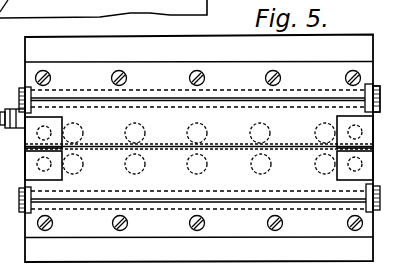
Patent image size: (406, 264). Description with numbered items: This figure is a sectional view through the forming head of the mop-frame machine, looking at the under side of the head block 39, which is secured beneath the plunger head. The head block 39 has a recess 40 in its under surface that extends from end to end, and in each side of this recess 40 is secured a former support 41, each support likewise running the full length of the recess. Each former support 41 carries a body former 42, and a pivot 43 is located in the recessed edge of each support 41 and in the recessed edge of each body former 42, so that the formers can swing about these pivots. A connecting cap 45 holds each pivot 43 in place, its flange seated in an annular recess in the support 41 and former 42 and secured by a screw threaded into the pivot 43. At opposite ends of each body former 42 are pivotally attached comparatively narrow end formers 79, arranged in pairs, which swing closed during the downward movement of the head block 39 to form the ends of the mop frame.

The head block 39 is at (372, 35).
The recess 40 is at (86, 237).
The former support 41 is at (247, 68).
The body former 42 is at (141, 112).
The pivot 43 is at (209, 100).
The connecting cap 45 is at (373, 109).
The end former 79 is at (338, 120).